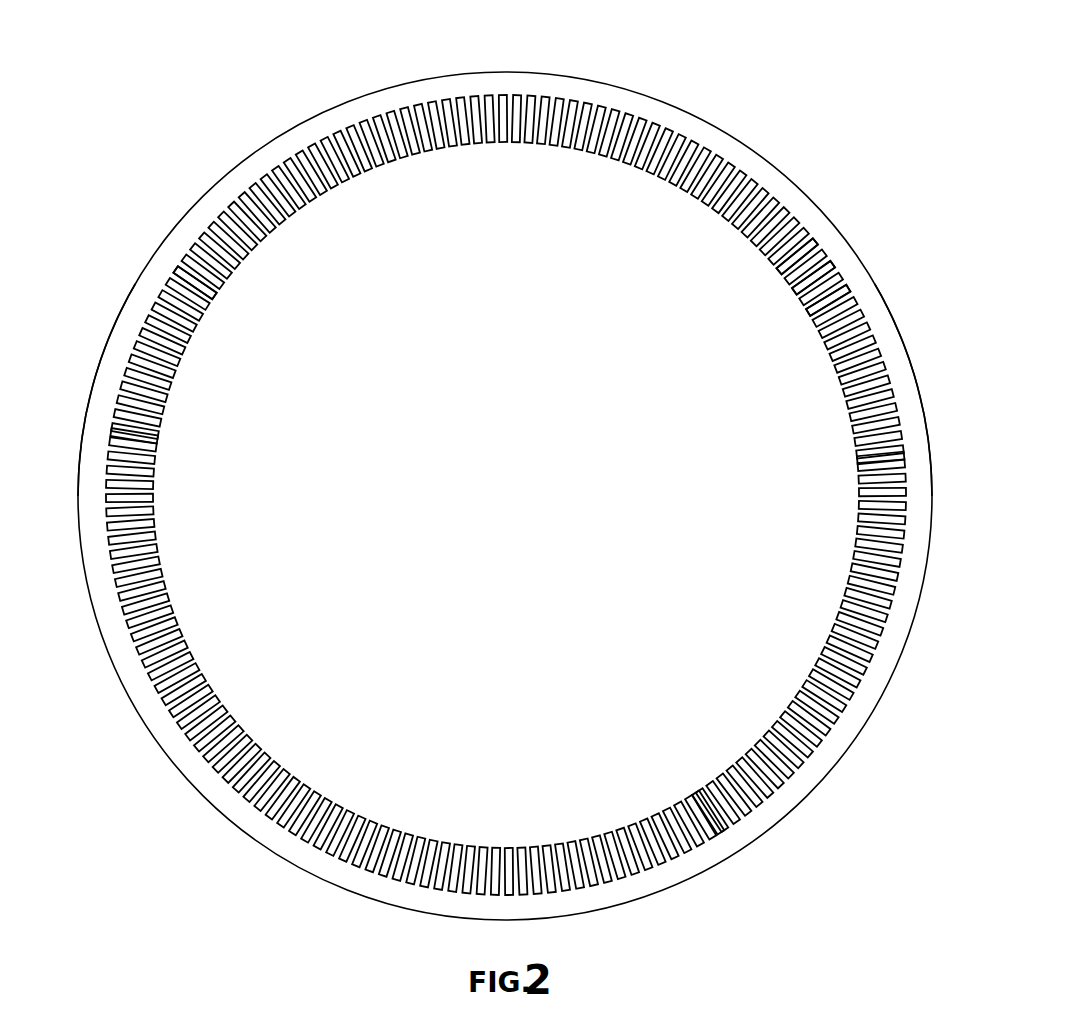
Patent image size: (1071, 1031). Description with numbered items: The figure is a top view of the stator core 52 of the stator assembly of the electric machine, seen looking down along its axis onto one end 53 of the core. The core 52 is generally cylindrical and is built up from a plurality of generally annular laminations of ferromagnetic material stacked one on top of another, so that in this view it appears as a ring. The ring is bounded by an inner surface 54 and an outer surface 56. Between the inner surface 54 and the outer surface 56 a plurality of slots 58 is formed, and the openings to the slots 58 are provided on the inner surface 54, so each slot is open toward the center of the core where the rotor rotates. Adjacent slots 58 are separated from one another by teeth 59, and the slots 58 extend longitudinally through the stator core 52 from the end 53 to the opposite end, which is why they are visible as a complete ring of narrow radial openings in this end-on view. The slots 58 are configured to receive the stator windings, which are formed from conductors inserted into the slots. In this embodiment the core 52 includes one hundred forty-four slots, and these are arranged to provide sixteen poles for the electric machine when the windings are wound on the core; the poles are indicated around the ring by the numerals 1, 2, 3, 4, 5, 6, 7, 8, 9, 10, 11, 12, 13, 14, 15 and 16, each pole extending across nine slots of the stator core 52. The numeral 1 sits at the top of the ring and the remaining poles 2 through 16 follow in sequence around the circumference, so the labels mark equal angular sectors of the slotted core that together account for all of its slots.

The core 52 is at (757, 117).
The end of the stator core 53 is at (568, 98).
The inner surface 54 is at (857, 464).
The outer surface 56 is at (80, 466).
The slots 58 is at (191, 277).
The teeth 59 is at (822, 325).
The pole 1 is at (503, 149).
The pole 2 is at (646, 157).
The pole 3 is at (767, 229).
The pole 4 is at (850, 350).
The pole 5 is at (864, 492).
The pole 6 is at (852, 635).
The pole 7 is at (772, 756).
The pole 8 is at (652, 836).
The pole 9 is at (508, 850).
The pole 10 is at (366, 833).
The pole 11 is at (244, 761).
The pole 12 is at (169, 641).
The pole 13 is at (154, 497).
The pole 14 is at (166, 355).
The pole 15 is at (240, 233).
The pole 16 is at (361, 154).